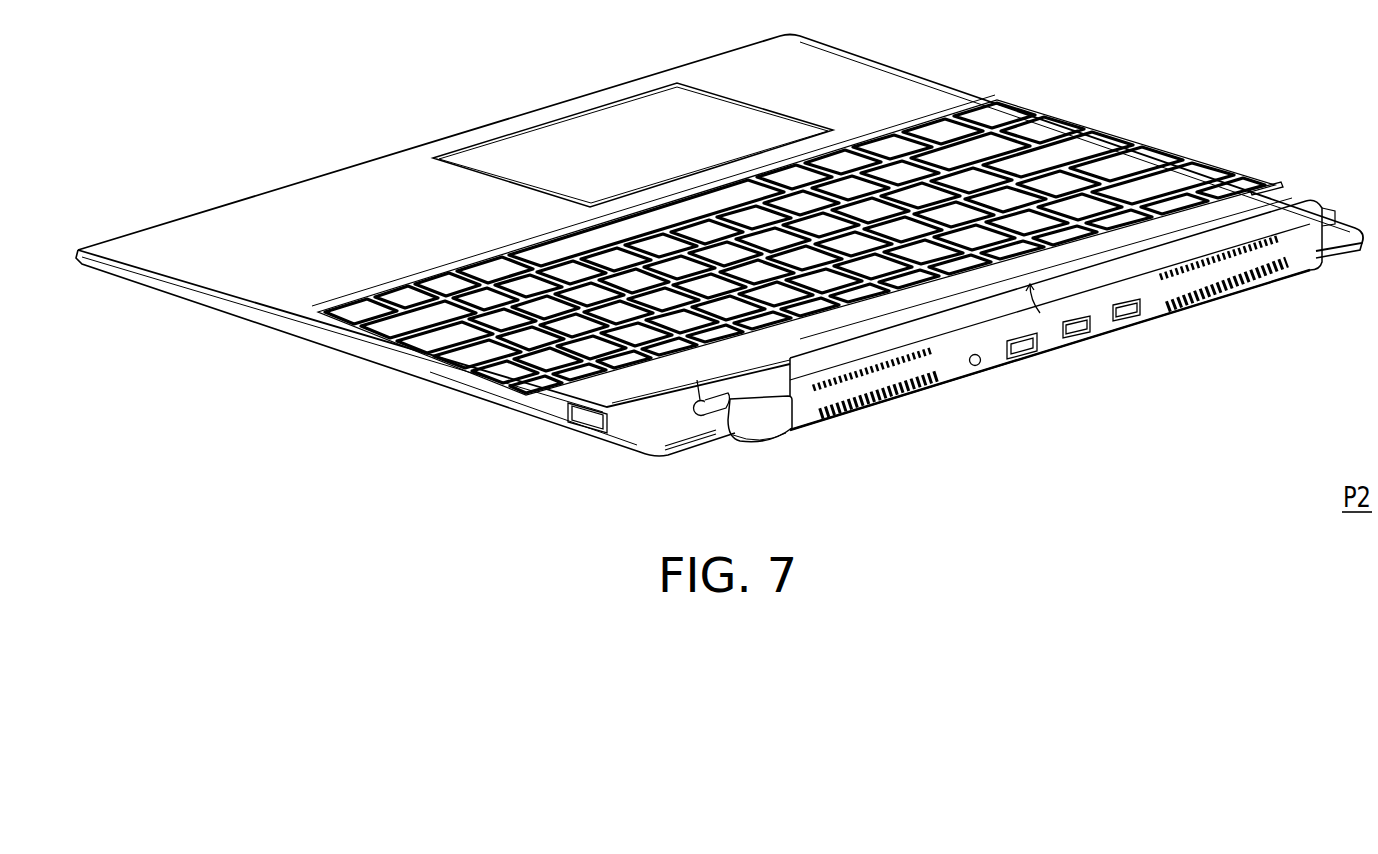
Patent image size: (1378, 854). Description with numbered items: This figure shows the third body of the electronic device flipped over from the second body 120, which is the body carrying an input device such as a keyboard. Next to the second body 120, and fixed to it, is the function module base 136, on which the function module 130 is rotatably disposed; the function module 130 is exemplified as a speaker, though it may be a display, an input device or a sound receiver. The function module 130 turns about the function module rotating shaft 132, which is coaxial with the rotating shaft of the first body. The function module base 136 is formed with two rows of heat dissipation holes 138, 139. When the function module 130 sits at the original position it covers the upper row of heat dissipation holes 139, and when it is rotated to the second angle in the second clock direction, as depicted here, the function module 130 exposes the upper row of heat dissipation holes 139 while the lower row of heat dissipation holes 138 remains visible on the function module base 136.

The second body 120 is at (327, 187).
The function module 130 is at (1083, 283).
The function module rotating shaft 132 is at (716, 405).
The function module base 136 is at (806, 416).
The heat dissipation holes 138 is at (1230, 292).
The heat dissipation holes 139 is at (1283, 247).